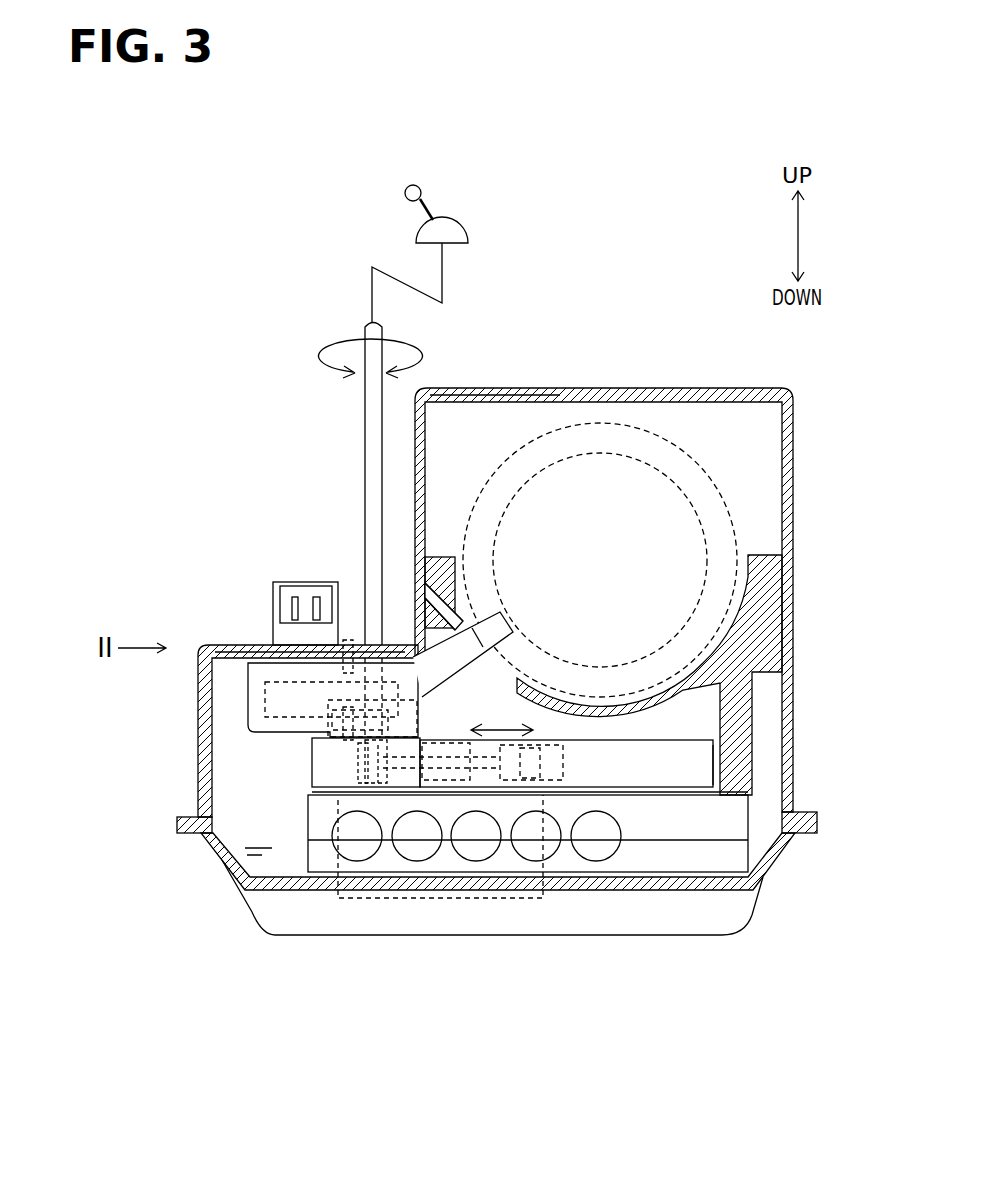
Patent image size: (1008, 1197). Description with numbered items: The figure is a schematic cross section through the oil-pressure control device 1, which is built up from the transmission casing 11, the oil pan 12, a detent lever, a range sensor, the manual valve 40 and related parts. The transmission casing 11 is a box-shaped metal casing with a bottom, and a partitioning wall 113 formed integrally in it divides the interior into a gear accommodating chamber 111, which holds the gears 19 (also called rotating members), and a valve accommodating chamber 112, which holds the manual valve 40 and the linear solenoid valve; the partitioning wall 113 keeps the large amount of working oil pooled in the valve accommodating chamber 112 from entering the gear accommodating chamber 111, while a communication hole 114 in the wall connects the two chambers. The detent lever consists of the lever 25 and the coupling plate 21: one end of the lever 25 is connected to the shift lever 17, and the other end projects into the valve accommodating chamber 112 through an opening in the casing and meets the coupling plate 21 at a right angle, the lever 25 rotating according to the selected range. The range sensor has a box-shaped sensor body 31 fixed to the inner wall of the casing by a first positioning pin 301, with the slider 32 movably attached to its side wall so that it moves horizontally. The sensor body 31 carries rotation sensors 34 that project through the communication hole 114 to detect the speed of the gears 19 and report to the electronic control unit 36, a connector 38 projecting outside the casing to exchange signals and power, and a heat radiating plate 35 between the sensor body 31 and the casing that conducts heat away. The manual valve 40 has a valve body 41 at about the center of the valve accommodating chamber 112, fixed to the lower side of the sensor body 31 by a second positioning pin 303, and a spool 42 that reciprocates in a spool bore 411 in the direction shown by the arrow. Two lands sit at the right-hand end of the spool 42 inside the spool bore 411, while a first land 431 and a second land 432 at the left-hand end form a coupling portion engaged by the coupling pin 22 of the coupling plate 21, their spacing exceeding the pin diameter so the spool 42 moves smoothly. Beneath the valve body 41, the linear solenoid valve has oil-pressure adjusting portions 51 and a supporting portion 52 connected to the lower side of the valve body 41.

The oil-pressure control device 1 is at (768, 385).
The transmission casing 11 is at (545, 389).
The gear accommodating chamber 111 is at (503, 417).
The valve accommodating chamber 112 is at (245, 788).
The partitioning wall 113 is at (752, 622).
The communication hole 114 is at (428, 555).
The oil pan 12 is at (770, 877).
The shift lever 17 is at (446, 212).
The gears 19 is at (668, 493).
The coupling plate 21 is at (335, 712).
The coupling pin 22 is at (365, 778).
The lever 25 is at (372, 408).
The first positioning pin 301 is at (346, 640).
The second positioning pin 303 is at (345, 752).
The sensor body 31 is at (255, 668).
The slider 32 is at (308, 840).
The rotation sensor 34 is at (443, 653).
The heat radiating plate 35 is at (250, 646).
The electronic control unit 36 is at (268, 690).
The connector 38 is at (272, 598).
The manual valve 40 is at (724, 734).
The valve body 41 is at (700, 772).
The spool bore 411 is at (548, 795).
The spool 42 is at (520, 792).
The first land 431 is at (350, 772).
The second land 432 is at (382, 783).
The oil-pressure adjusting portion 51 is at (600, 850).
The supporting portion 52 is at (703, 853).